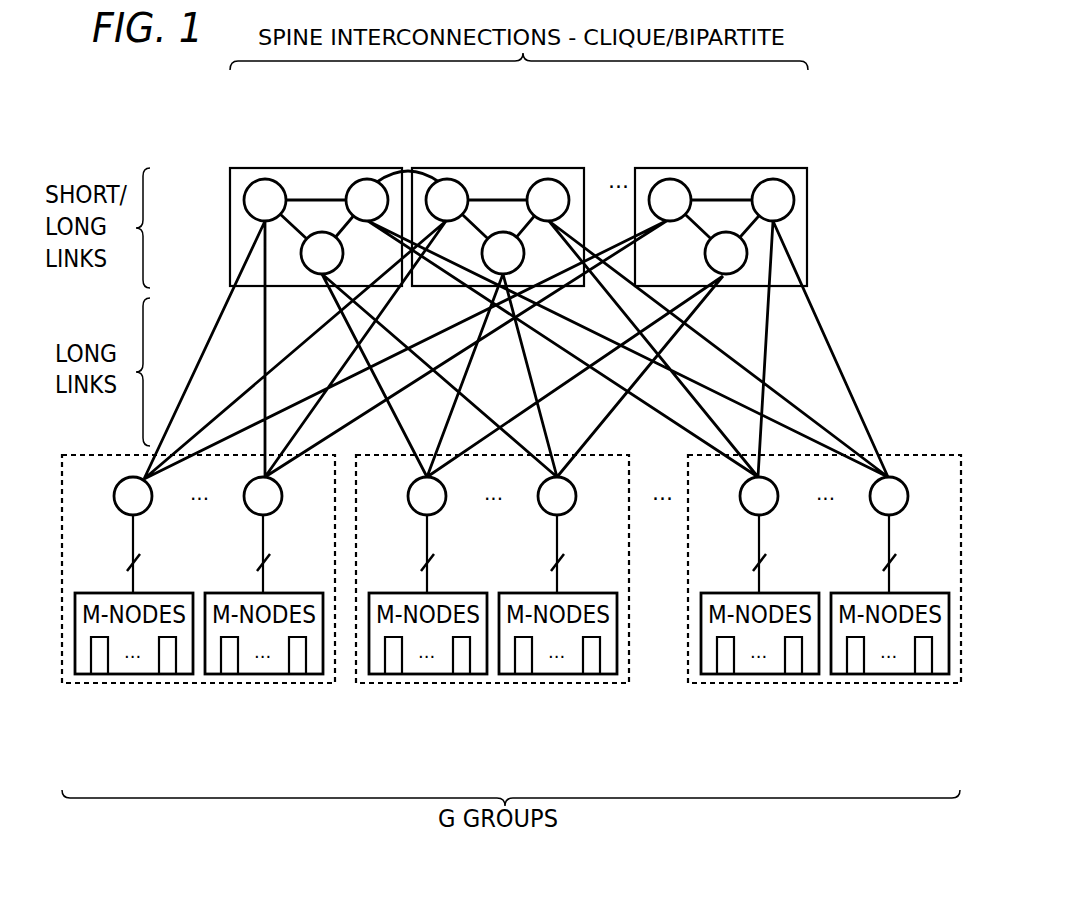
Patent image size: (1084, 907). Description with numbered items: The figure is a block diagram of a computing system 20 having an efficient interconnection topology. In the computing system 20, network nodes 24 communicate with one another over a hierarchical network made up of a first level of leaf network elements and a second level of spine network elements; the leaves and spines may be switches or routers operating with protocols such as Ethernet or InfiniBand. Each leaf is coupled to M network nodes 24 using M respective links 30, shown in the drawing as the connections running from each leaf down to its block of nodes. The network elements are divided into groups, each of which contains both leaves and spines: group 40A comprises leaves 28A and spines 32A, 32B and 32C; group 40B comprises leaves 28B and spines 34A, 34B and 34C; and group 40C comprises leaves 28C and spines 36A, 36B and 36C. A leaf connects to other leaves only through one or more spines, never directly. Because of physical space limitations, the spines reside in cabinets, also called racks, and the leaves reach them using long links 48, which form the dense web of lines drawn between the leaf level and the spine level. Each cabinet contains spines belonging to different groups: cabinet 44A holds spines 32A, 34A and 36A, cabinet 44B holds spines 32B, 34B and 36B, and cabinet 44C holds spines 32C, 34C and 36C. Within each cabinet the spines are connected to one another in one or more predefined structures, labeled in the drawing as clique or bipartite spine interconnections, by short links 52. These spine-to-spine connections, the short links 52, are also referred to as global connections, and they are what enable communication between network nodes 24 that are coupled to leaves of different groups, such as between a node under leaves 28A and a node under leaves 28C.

The computing system 20 is at (881, 164).
The network nodes 24 is at (99, 683).
The leaves 28A is at (246, 511).
The leaves 28B is at (540, 511).
The leaves 28C is at (872, 511).
The links 30 is at (134, 543).
The spine 32A is at (272, 178).
The spine 32B is at (454, 178).
The spine 32C is at (677, 178).
The spine 34A is at (367, 178).
The spine 34B is at (548, 178).
The spine 34C is at (773, 178).
The spine 36A is at (305, 270).
The spine 36B is at (488, 270).
The spine 36C is at (728, 275).
The group 40A is at (62, 685).
The group 40B is at (356, 685).
The group 40C is at (693, 685).
The cabinet 44A is at (303, 168).
The cabinet 44B is at (485, 168).
The cabinet 44C is at (708, 168).
The long links 48 is at (416, 168).
The short links 52 is at (340, 235).